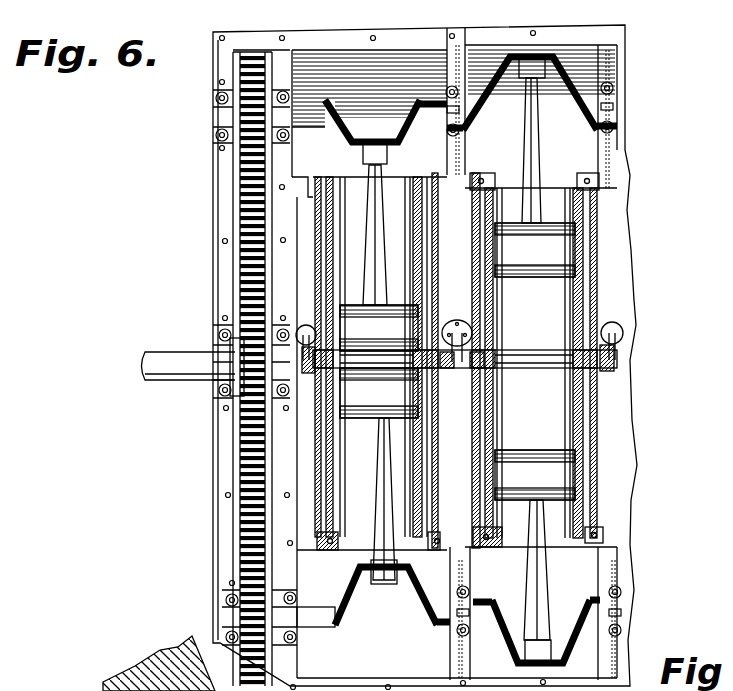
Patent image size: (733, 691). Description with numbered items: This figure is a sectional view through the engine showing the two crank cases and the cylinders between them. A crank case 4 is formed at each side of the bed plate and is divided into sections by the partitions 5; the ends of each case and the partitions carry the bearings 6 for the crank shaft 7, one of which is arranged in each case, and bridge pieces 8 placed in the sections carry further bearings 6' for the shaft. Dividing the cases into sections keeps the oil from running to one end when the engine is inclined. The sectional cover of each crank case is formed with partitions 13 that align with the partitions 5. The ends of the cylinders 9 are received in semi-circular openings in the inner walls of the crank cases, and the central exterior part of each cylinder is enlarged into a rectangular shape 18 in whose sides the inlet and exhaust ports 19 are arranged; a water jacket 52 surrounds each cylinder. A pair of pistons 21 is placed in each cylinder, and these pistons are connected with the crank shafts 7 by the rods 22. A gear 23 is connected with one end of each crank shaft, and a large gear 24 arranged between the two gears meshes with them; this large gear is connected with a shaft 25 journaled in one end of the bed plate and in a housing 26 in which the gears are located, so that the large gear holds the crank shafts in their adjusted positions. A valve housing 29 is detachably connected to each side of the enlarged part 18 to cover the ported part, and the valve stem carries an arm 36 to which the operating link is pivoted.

The crank case 4 is at (425, 357).
The partitions 5 is at (605, 145).
The bearings 6 is at (316, 598).
The bearings 6' is at (559, 360).
The crank shaft 7 is at (430, 108).
The bridge pieces 8 is at (488, 662).
The cylinders 9 is at (640, 300).
The partitions 13 is at (447, 72).
The rectangular enlargement 18 is at (177, 663).
The inlet and exhaust ports 19 is at (490, 367).
The pistons 21 is at (534, 256).
The rods 22 is at (372, 222).
The gear 23 is at (245, 128).
The large gear 24 is at (247, 432).
The shaft 25 is at (185, 352).
The housing 26 is at (228, 470).
The valve housing 29 is at (318, 378).
The arm 36 is at (462, 365).
The water jacket 52 is at (313, 195).